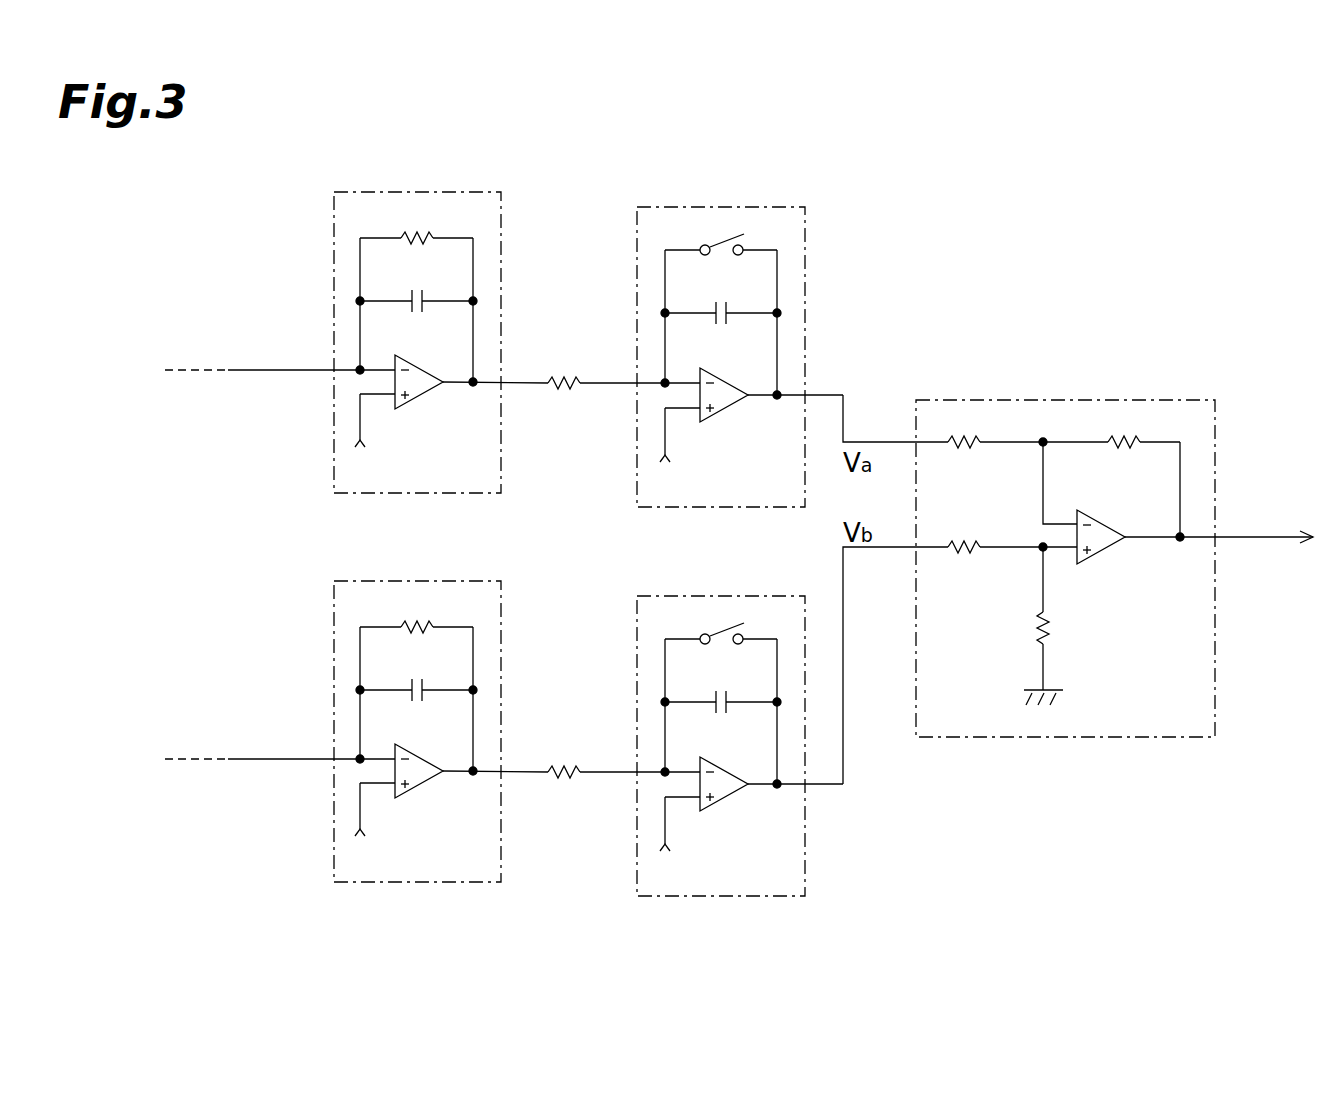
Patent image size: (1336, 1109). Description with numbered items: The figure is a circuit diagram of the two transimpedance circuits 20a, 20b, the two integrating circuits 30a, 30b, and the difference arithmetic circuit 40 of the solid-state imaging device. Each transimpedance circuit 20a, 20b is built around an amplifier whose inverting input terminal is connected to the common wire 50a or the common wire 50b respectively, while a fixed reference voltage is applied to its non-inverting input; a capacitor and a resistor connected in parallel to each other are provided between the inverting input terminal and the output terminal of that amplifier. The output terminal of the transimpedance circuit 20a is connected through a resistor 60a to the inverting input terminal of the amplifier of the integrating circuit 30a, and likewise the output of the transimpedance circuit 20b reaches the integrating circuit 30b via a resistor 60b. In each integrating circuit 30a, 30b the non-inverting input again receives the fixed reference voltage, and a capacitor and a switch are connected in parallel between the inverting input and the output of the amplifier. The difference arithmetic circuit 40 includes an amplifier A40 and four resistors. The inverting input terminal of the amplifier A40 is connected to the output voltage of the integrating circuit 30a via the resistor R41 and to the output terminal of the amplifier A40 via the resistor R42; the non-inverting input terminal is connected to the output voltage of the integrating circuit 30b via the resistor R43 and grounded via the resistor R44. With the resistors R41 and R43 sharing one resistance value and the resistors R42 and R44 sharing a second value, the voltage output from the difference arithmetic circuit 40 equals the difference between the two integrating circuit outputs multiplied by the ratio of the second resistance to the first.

The transimpedance circuit 20a is at (441, 313).
The transimpedance circuit 20b is at (441, 702).
The integrating circuit 30a is at (740, 325).
The integrating circuit 30b is at (740, 714).
The difference arithmetic circuit 40 is at (1115, 539).
The common wire 50a is at (268, 368).
The common wire 50b is at (262, 728).
The resistor 60a is at (568, 378).
The resistor 60b is at (606, 738).
The resistor R41 is at (967, 447).
The resistor R42 is at (1126, 447).
The resistor R43 is at (967, 552).
The resistor R44 is at (1047, 627).
The amplifier A40 is at (1110, 556).